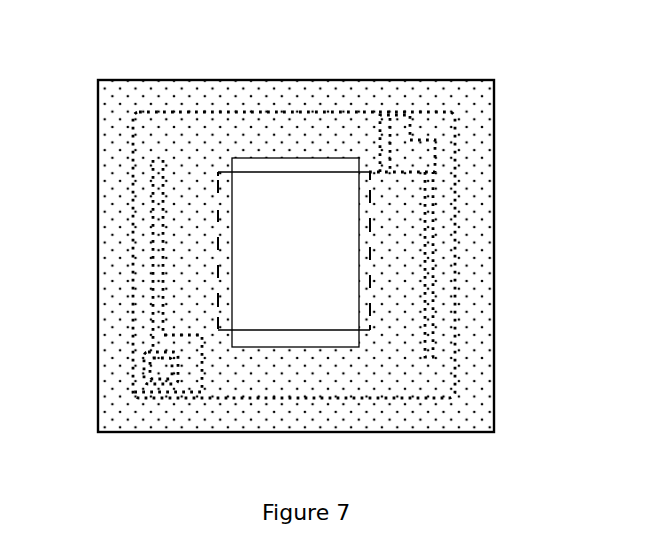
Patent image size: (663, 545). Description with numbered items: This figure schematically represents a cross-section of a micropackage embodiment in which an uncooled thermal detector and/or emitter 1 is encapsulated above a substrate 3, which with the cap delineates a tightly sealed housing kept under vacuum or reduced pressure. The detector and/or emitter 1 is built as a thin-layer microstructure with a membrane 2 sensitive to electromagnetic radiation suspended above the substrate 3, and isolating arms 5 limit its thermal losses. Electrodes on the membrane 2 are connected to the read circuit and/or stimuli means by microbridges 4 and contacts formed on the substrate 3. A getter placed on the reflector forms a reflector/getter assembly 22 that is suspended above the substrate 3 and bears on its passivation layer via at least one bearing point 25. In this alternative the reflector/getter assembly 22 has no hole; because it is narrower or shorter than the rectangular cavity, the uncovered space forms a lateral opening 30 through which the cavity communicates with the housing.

The uncooled thermal detector and/or emitter 1 is at (304, 98).
The membrane 2 is at (215, 137).
The substrate 3 is at (472, 324).
The microbridges 4 is at (423, 132).
The isolating arms 5 is at (445, 250).
The reflector/getter assembly 22 is at (333, 258).
The bearing point 25 is at (225, 235).
The lateral opening 30 is at (262, 333).